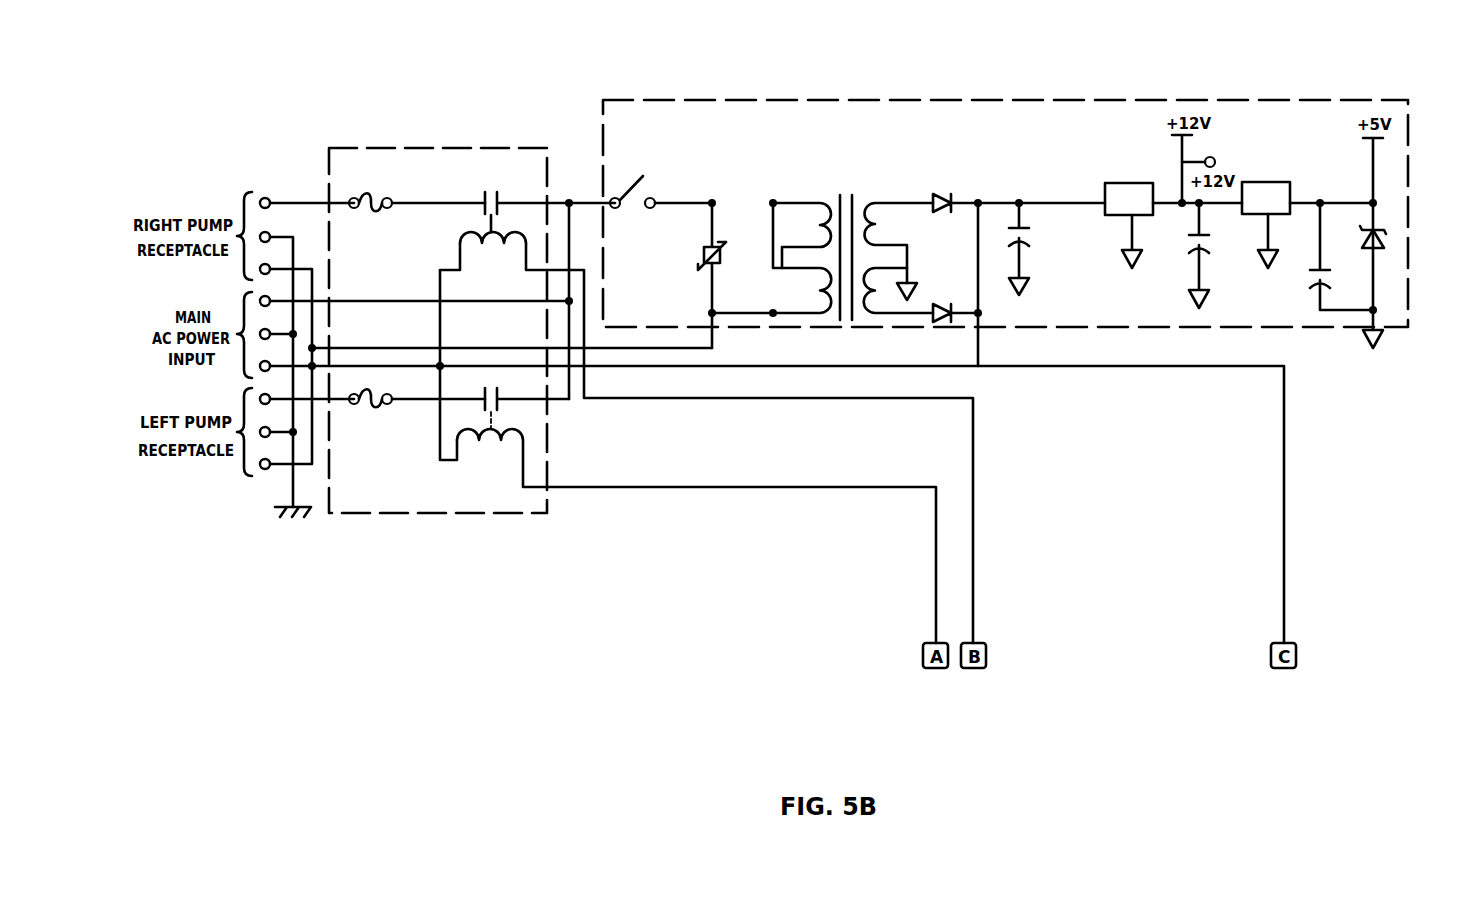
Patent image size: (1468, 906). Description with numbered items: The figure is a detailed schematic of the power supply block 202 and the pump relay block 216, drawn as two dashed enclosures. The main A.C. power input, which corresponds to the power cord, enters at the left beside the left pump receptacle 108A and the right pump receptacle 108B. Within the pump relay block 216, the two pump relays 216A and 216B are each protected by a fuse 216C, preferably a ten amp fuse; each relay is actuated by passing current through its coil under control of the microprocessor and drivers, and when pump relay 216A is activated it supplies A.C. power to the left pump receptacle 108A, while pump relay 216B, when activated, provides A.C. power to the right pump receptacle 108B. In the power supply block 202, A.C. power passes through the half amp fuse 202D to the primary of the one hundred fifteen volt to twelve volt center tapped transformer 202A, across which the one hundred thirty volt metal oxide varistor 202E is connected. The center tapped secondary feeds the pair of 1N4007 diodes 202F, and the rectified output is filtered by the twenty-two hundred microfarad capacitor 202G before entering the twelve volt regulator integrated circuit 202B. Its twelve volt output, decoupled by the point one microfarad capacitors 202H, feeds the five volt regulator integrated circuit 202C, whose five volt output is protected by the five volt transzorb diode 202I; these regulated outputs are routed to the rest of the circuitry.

The left pump receptacle 108A is at (130, 436).
The right pump receptacle 108B is at (124, 236).
The pump relay block 216 is at (452, 143).
The pump relay 216A is at (493, 444).
The pump relay 216B is at (507, 196).
The fuse 216C is at (368, 210).
The power supply block 202 is at (1300, 96).
The transformer 202A is at (877, 171).
The integrated circuit 202B is at (1133, 176).
The integrated circuit 202C is at (1268, 174).
The fuse 202D is at (646, 176).
The metal oxide varistor 202E is at (714, 262).
The diodes 202F is at (945, 192).
The capacitor 202G is at (1031, 228).
The capacitors 202H is at (1308, 278).
The diode 202I is at (1386, 234).